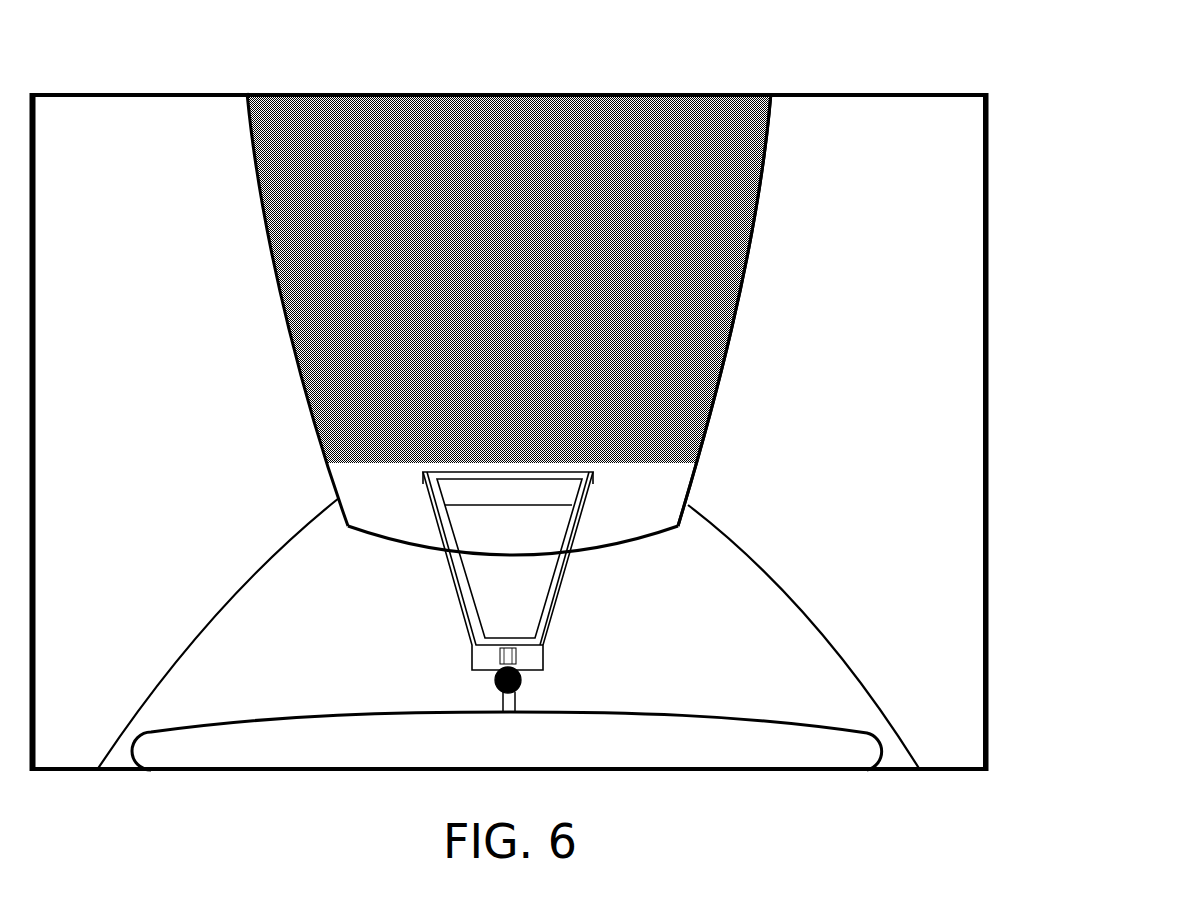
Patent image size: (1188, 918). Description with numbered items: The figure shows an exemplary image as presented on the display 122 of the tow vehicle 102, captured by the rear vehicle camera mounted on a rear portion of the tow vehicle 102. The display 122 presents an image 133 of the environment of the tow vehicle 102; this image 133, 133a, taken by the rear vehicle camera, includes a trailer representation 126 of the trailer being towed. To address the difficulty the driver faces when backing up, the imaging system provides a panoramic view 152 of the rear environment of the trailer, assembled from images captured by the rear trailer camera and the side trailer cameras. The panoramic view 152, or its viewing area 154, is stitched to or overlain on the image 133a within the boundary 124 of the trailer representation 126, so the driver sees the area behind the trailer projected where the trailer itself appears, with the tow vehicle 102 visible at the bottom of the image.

The display 122 is at (798, 64).
The image 133 is at (958, 210).
The image captured by the rear vehicle camera 133a is at (1022, 212).
The panoramic view 152 is at (570, 230).
The viewing area of the panoramic view 154 is at (570, 230).
The trailer representation 126 is at (640, 347).
The boundary of the trailer representation 124 is at (753, 243).
The tow vehicle 102 is at (528, 749).